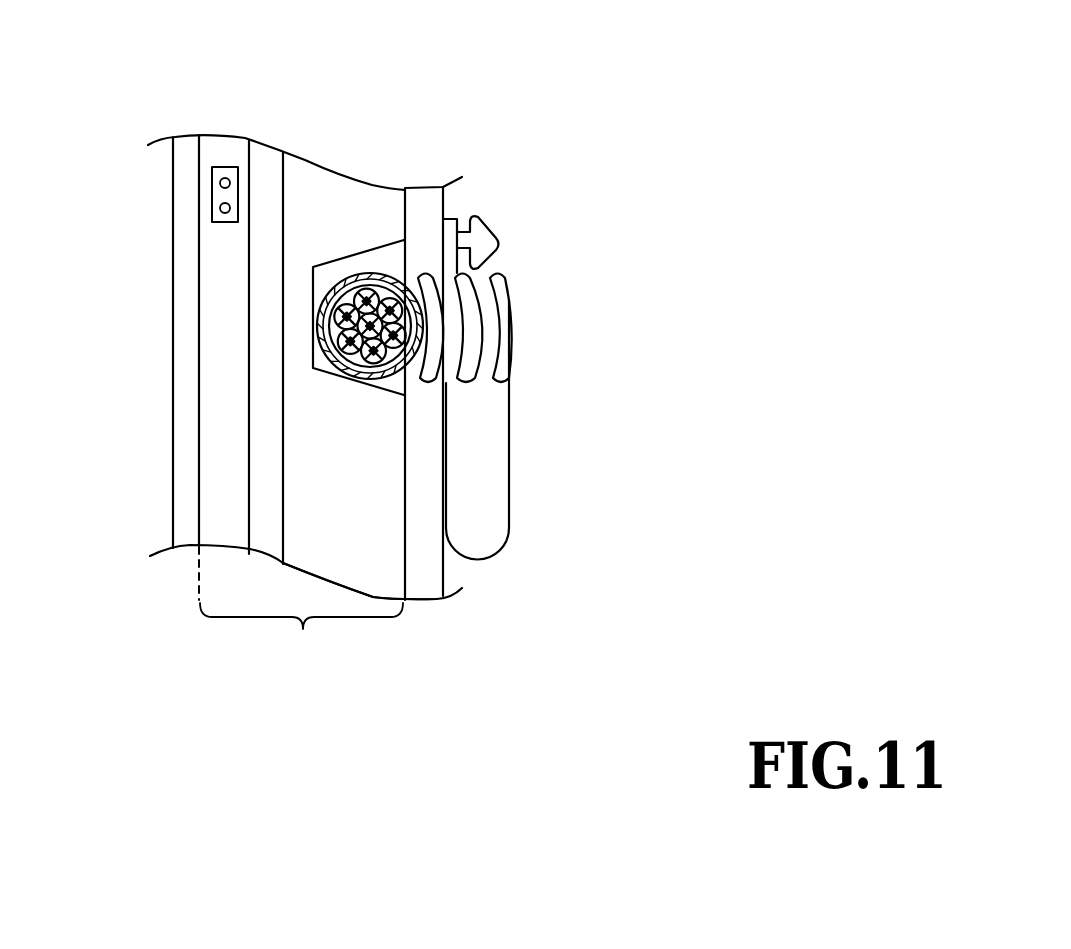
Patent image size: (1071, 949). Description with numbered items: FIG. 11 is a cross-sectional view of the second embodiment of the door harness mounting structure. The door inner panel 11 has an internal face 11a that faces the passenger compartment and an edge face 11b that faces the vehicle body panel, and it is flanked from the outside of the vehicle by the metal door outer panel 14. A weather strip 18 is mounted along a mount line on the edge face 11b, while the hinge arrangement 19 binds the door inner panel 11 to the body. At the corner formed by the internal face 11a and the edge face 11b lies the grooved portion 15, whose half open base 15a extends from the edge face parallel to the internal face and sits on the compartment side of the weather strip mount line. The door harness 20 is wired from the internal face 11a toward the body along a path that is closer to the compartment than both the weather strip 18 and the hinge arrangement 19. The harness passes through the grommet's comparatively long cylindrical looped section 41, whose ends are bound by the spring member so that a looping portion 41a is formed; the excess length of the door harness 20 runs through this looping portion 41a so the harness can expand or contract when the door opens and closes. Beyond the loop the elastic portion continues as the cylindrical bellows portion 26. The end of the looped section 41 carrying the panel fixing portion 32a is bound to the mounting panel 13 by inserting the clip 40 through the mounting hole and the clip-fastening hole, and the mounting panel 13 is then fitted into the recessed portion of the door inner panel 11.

The door inner panel 11 is at (305, 401).
The internal face 11a is at (407, 548).
The edge face 11b is at (220, 153).
The mounting panel 13 is at (425, 207).
The door outer panel 14 is at (182, 239).
The grooved portion 15 is at (391, 247).
The half open base 15a is at (346, 258).
The weather strip 18 is at (270, 175).
The hinge arrangement 19 is at (212, 200).
The door harness 20 is at (534, 320).
The bellows portion 26 is at (477, 321).
The guide portion 32a is at (449, 232).
The clip 40 is at (492, 231).
The looped section 41 is at (571, 430).
The looping portion 41a is at (480, 507).